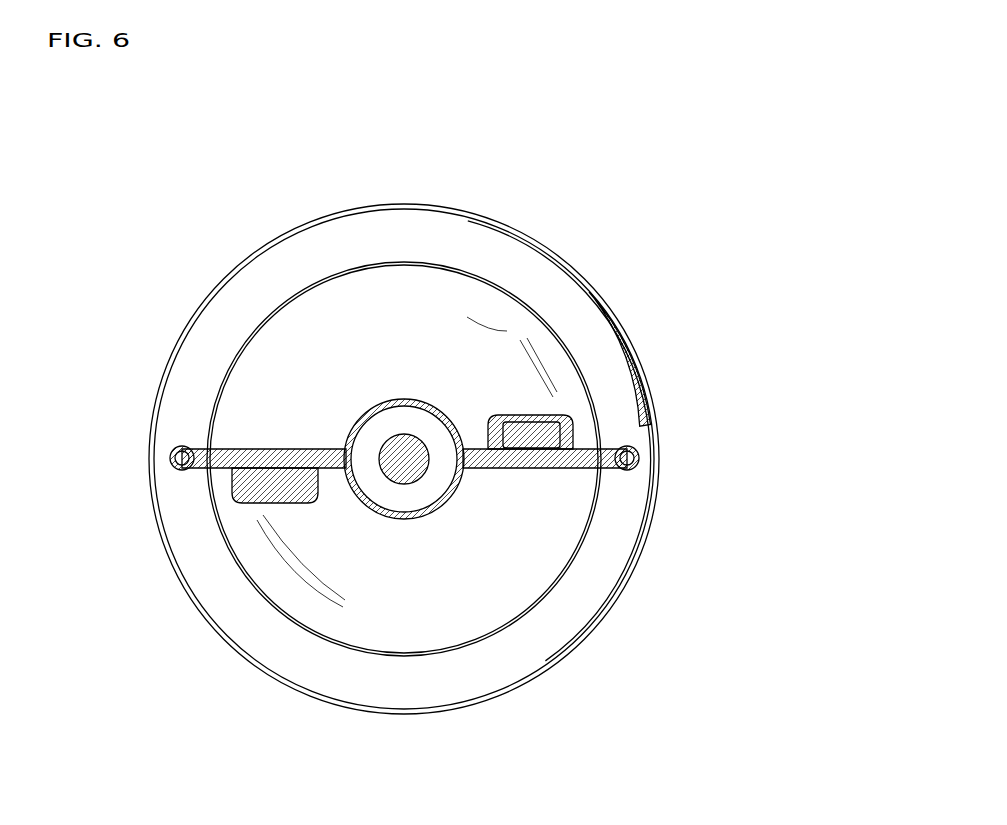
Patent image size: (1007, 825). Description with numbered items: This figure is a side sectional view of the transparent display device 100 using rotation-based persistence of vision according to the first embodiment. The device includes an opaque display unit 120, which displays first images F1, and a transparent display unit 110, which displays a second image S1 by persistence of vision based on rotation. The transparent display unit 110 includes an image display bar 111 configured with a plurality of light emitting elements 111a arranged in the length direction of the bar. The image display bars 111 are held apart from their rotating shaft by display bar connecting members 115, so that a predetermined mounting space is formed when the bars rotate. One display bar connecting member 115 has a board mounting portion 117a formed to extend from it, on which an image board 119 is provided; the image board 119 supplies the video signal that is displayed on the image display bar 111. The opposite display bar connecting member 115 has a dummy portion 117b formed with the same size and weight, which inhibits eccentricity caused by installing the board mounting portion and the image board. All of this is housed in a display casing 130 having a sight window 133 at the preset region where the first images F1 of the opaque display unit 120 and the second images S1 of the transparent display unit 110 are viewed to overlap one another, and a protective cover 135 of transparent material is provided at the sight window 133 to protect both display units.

The transparent display device 100 is at (224, 147).
The transparent display unit 110 is at (309, 267).
The image display bar 111 is at (378, 283).
The light emitting element 111a is at (168, 455).
The display bar connecting member 115 is at (220, 447).
The board mounting portion 117a is at (530, 413).
The dummy portion 117b is at (247, 503).
The image board 119 is at (577, 480).
The opaque display unit 120 is at (510, 498).
The display casing 130 is at (355, 714).
The sight window 133 is at (592, 288).
The protective cover 135 is at (645, 367).
The first image F1 is at (450, 255).
The second image S1 is at (626, 331).